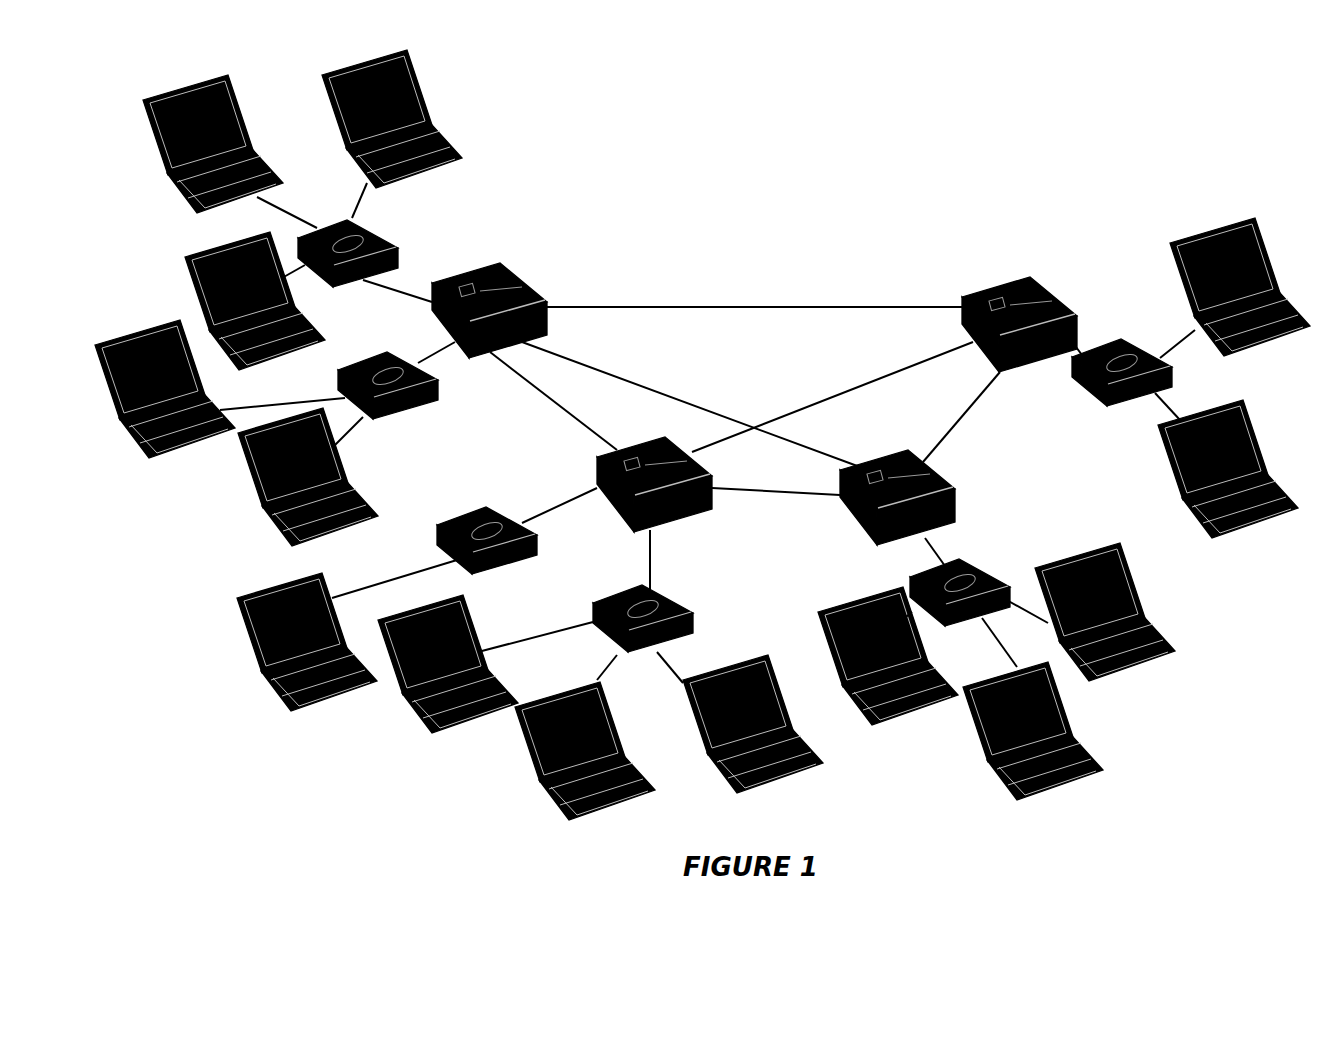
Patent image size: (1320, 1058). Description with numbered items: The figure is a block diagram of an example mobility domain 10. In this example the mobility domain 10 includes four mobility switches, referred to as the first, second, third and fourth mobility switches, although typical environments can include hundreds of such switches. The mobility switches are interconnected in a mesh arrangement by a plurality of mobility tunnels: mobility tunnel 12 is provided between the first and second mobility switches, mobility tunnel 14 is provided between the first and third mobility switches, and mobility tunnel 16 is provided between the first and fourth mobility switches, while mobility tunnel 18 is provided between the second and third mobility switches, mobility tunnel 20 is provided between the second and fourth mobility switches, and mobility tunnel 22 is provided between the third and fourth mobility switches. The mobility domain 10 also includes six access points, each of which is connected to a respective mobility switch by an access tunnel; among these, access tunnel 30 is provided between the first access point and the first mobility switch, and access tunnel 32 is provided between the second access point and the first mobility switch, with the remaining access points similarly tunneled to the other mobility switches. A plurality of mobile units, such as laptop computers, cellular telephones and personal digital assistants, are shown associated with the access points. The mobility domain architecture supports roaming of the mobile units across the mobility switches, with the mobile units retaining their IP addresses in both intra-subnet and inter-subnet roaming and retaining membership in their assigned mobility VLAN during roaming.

The mobility domain 10 is at (706, 168).
The mobility tunnel 12 is at (553, 419).
The mobility tunnel 14 is at (691, 398).
The mobility tunnel 16 is at (753, 275).
The mobility tunnel 18 is at (772, 520).
The mobility tunnel 20 is at (832, 390).
The mobility tunnel 22 is at (984, 417).
The access tunnel 30 is at (431, 248).
The access tunnel 32 is at (468, 381).